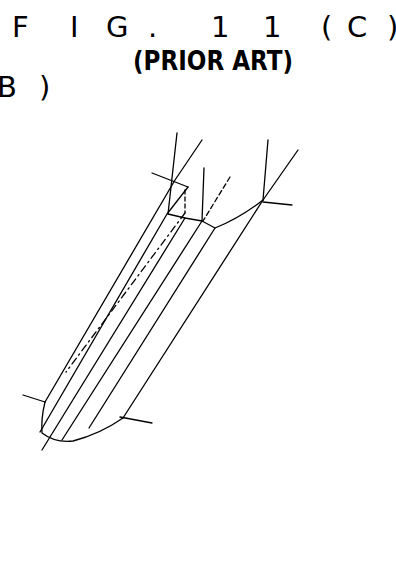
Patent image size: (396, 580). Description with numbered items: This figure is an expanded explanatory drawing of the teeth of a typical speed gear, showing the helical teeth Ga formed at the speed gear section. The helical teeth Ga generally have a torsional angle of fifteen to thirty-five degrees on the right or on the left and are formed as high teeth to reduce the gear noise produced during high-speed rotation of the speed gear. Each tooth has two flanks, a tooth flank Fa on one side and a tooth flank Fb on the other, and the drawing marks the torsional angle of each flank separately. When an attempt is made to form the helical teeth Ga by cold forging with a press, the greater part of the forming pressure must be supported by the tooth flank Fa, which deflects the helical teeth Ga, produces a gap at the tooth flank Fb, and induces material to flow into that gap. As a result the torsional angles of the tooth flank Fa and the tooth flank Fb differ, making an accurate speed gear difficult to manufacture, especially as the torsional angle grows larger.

The tooth flank Fb is at (115, 300).
The tooth flank Fa is at (182, 305).
The helical teeth Ga is at (136, 386).